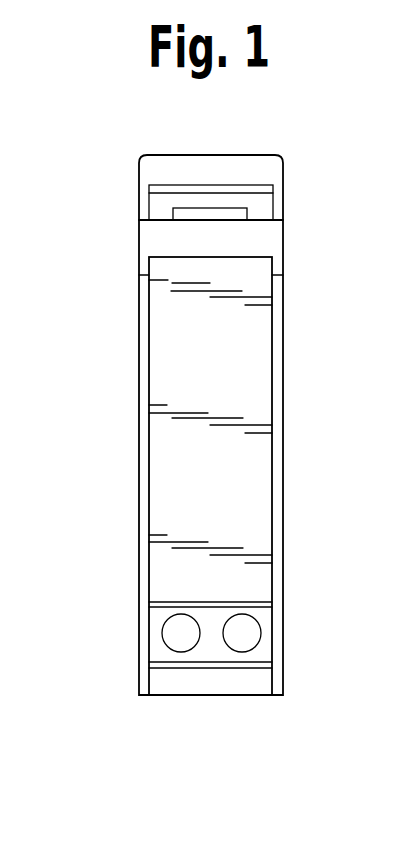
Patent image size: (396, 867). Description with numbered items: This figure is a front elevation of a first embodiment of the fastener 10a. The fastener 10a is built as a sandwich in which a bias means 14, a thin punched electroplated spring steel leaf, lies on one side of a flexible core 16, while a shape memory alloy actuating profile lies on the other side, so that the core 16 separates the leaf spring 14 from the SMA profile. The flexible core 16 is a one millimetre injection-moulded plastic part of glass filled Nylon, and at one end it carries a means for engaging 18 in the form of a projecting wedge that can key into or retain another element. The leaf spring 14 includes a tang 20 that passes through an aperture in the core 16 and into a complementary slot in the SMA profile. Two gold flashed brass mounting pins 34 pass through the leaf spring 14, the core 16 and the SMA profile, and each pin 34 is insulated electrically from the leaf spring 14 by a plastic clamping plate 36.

The fastener 10a is at (311, 123).
The bias means 14 is at (237, 363).
The flexible core 16 is at (272, 167).
The means for engaging 18 is at (270, 235).
The tang 20 is at (177, 213).
The mounting pins 34 is at (170, 632).
The clamping plate 36 is at (265, 653).